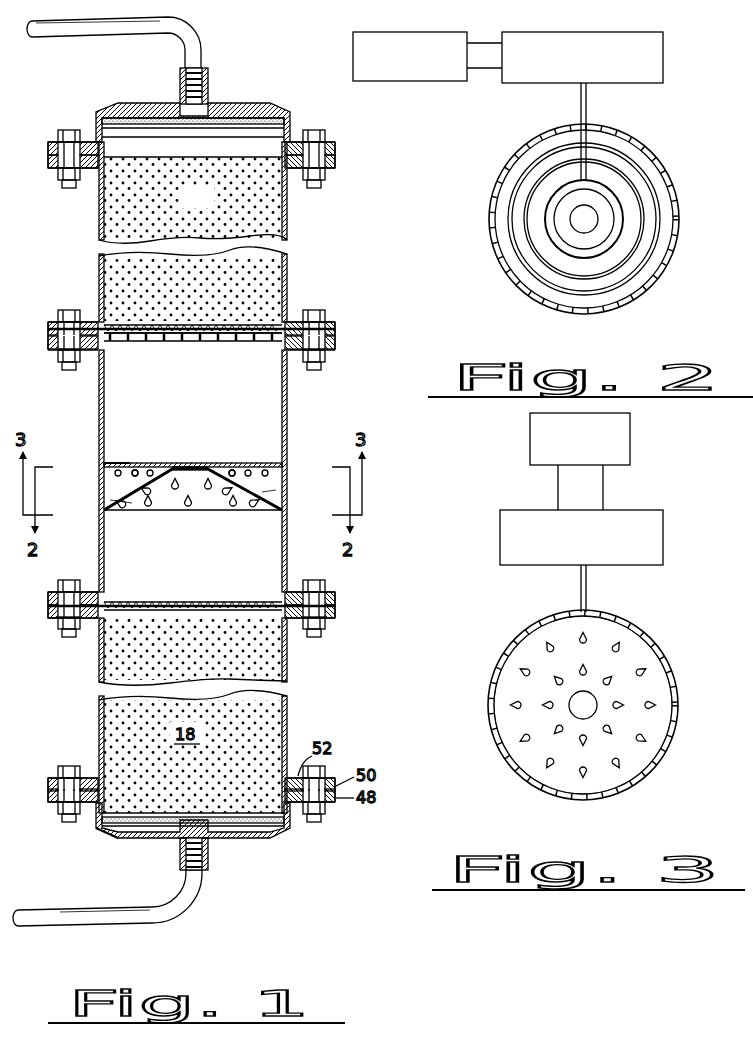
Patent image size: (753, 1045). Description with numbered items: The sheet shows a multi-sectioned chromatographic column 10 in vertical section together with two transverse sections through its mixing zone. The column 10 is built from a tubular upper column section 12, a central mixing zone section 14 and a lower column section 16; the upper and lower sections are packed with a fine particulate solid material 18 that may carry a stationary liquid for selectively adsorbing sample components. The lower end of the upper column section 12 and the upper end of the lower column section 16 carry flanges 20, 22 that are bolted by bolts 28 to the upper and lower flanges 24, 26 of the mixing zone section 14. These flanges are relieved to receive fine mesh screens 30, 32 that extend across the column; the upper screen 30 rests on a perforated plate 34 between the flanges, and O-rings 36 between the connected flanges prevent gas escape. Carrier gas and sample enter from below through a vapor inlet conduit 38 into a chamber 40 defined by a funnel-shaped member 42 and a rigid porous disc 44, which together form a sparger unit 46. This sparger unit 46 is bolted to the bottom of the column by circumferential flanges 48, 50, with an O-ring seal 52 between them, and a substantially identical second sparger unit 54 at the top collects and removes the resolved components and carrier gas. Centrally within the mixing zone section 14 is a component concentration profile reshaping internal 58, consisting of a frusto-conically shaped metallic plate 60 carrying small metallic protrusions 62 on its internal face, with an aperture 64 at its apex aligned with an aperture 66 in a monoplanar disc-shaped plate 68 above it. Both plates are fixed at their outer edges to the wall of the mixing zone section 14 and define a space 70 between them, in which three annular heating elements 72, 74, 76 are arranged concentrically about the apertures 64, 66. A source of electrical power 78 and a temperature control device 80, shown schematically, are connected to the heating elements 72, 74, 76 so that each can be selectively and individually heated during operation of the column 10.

In FIG. 1, the chromatographic column 10 is at (291, 262).
In FIG. 1, the upper column section 12 is at (288, 219).
In FIG. 1, the mixing zone section 14 is at (288, 410).
In FIG. 2, the mixing zone section 14 is at (492, 196).
In FIG. 3, the mixing zone section 14 is at (492, 682).
In FIG. 1, the lower column section 16 is at (288, 664).
In FIG. 1, the particulate solid material 18 is at (210, 208).
In FIG. 1, the flange 20 is at (336, 328).
In FIG. 1, the flange 22 is at (337, 614).
In FIG. 1, the upper flange 24 is at (336, 349).
In FIG. 1, the lower flange 26 is at (337, 602).
In FIG. 1, the bolts 28 is at (316, 311).
In FIG. 1, the upper screen 30 is at (136, 340).
In FIG. 1, the lower screen 32 is at (148, 602).
In FIG. 1, the perforated plate 34 is at (205, 341).
In FIG. 1, the O-rings 36 is at (86, 312).
In FIG. 1, the vapor inlet conduit 38 is at (96, 926).
In FIG. 1, the chamber 40 is at (160, 832).
In FIG. 1, the funnel-shaped member 42 is at (108, 832).
In FIG. 1, the porous disc 44 is at (255, 832).
In FIG. 1, the sparger unit 46 is at (216, 845).
In FIG. 1, the circumferential flange 48 is at (52, 145).
In FIG. 1, the circumferential flange 50 is at (50, 166).
In FIG. 1, the O-ring seal 52 is at (100, 128).
In FIG. 1, the second sparger unit 54 is at (137, 100).
In FIG. 1, the component concentration profile reshaping internal 58 is at (195, 481).
In FIG. 1, the frusto-conically shaped metallic plate 60 is at (114, 512).
In FIG. 2, the frusto-conically shaped metallic plate 60 is at (638, 284).
In FIG. 3, the frusto-conically shaped metallic plate 60 is at (526, 758).
In FIG. 1, the small metallic protrusions 62 is at (182, 510).
In FIG. 3, the small metallic protrusions 62 is at (500, 712).
In FIG. 1, the aperture 64 is at (190, 463).
In FIG. 2, the aperture 64 is at (593, 227).
In FIG. 3, the aperture 64 is at (592, 713).
In FIG. 1, the aperture 66 is at (194, 464).
In FIG. 1, the disc-shaped plate 68 is at (116, 463).
In FIG. 1, the space 70 is at (110, 500).
In FIG. 1, the annular heating element 72 is at (236, 470).
In FIG. 2, the annular heating element 72 is at (506, 232).
In FIG. 1, the annular heating element 74 is at (136, 470).
In FIG. 2, the annular heating element 74 is at (536, 256).
In FIG. 1, the annular heating element 76 is at (114, 474).
In FIG. 2, the annular heating element 76 is at (566, 256).
In FIG. 2, the source of electrical power 78 is at (400, 82).
In FIG. 3, the source of electrical power 78 is at (632, 438).
In FIG. 2, the temperature control device 80 is at (660, 40).
In FIG. 3, the temperature control device 80 is at (660, 518).